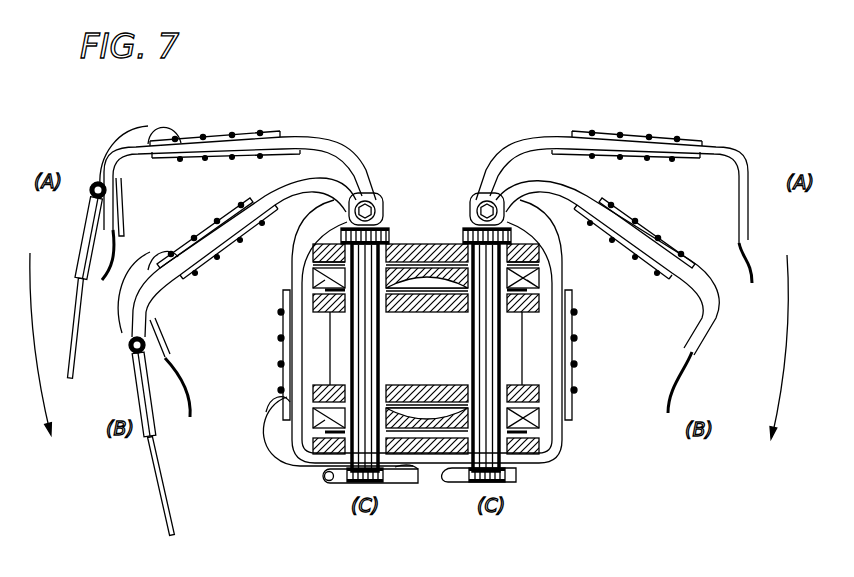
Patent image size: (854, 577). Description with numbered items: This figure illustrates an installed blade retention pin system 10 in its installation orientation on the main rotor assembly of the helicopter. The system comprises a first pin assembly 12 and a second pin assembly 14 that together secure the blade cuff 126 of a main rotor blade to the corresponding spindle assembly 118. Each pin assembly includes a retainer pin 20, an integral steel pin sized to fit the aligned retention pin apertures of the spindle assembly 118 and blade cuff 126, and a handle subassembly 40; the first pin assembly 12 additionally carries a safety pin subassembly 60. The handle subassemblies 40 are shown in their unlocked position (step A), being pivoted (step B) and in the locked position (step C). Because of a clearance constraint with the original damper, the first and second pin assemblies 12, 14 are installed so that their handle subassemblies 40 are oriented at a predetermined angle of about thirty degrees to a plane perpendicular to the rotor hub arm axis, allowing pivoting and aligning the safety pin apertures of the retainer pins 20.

The blade retention pin system 10 is at (466, 74).
The first pin assembly 12 is at (387, 148).
The second pin assembly 14 is at (470, 148).
The retainer pin 20 is at (457, 363).
The handle subassembly 40 is at (267, 127).
The safety pin subassembly 60 is at (100, 186).
The spindle assembly 118 is at (433, 263).
The blade cuff 126 is at (412, 243).